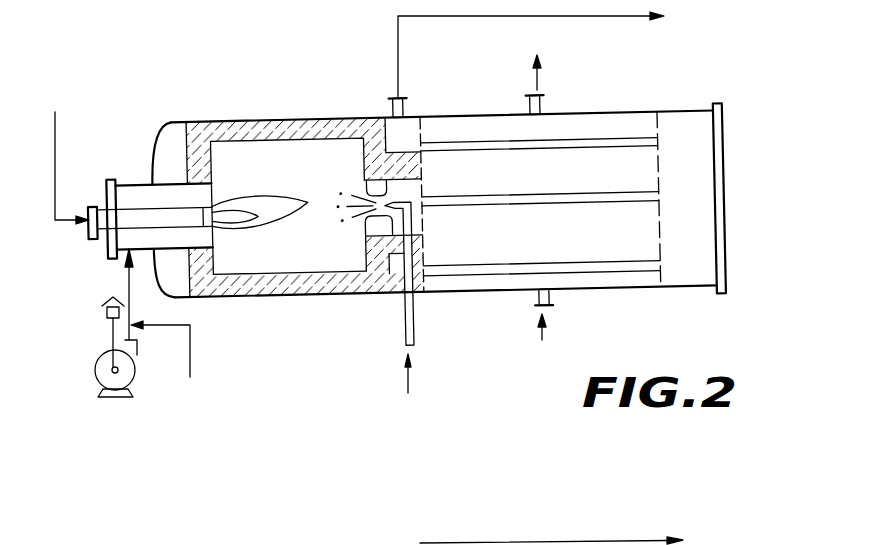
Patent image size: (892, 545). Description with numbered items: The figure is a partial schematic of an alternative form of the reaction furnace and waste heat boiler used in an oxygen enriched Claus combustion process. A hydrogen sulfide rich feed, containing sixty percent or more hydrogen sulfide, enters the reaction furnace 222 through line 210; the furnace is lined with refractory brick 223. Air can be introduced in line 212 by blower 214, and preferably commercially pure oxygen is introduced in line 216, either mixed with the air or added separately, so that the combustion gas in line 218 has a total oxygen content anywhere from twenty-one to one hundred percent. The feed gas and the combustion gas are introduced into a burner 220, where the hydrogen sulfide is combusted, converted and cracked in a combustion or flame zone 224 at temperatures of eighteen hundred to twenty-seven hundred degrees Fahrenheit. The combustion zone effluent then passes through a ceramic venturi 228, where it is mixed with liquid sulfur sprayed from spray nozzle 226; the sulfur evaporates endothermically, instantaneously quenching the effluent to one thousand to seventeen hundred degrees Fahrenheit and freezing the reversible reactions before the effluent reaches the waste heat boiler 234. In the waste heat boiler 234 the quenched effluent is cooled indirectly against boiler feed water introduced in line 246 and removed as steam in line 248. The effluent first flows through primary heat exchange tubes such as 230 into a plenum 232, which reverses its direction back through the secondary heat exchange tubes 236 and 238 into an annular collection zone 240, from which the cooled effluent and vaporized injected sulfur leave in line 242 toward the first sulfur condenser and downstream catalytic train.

The line 210 is at (58, 190).
The line 212 is at (112, 327).
The blower 214 is at (93, 378).
The line 216 is at (192, 337).
The combustion gas line 218 is at (123, 283).
The burner 220 is at (134, 183).
The reaction furnace 222 is at (281, 106).
The refractory brick 223 is at (271, 298).
The combustion or flame zone 224 is at (304, 181).
The spray nozzle 226 is at (398, 320).
The ceramic venturi 228 is at (362, 197).
The primary heat exchange tubes 230 is at (489, 199).
The plenum 232 is at (711, 226).
The waste heat boiler 234 is at (628, 103).
The secondary heat exchange tube 236 is at (487, 144).
The secondary heat exchange tube 238 is at (472, 269).
The annular collection zone 240 is at (417, 125).
The line 242 is at (495, 20).
The line 246 is at (562, 315).
The line 248 is at (543, 79).